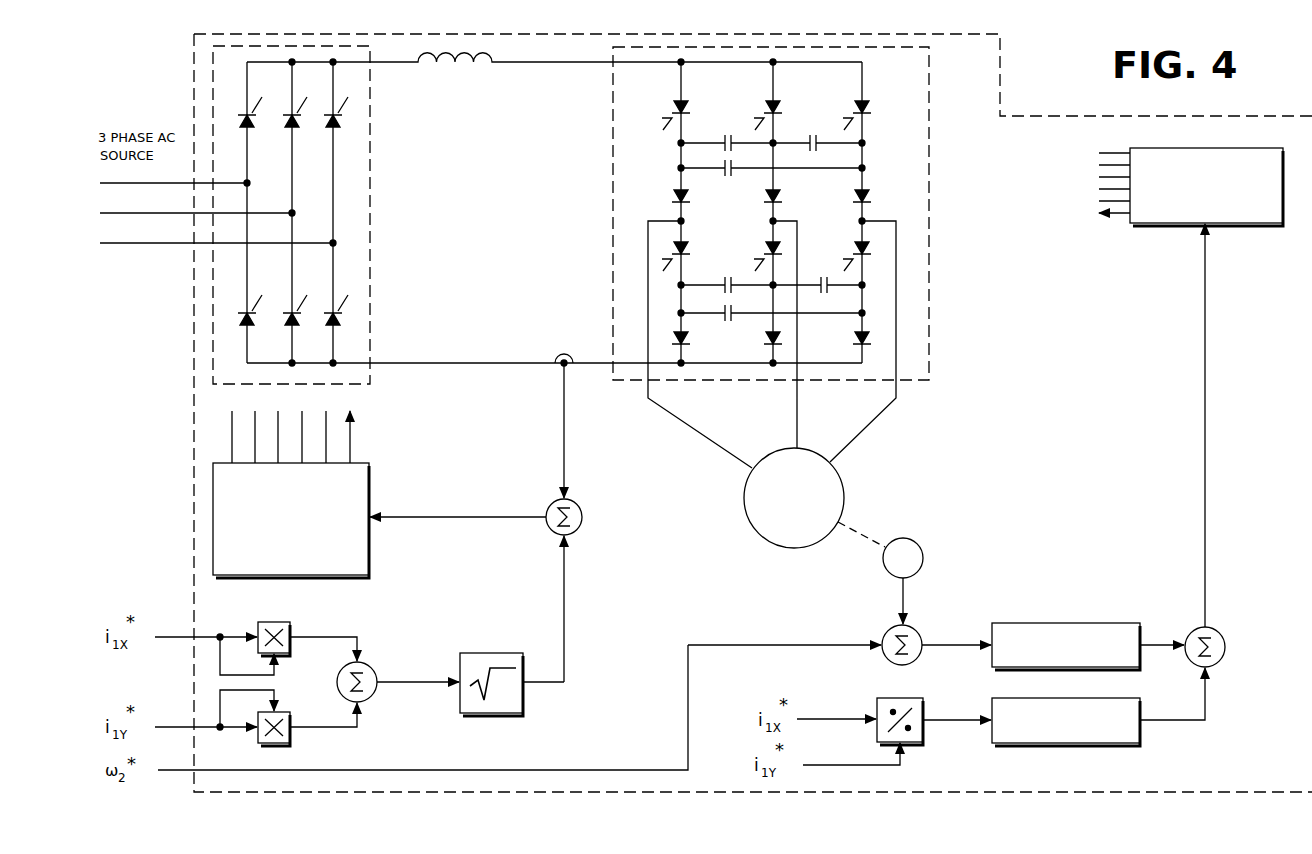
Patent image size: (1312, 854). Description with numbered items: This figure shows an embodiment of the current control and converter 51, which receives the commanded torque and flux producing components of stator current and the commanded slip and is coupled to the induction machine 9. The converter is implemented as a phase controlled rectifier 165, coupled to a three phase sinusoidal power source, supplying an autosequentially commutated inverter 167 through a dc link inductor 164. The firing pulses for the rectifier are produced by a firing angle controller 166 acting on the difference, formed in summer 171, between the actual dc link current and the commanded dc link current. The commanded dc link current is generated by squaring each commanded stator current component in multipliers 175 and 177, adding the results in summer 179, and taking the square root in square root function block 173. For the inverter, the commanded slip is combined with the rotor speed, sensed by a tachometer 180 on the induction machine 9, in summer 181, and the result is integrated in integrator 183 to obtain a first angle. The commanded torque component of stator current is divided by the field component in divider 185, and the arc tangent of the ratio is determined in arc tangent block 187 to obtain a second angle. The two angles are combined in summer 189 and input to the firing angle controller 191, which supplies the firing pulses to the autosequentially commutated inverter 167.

The current control and converter 51 is at (1043, 117).
The induction machine 9 is at (844, 482).
The DC link inductor 164 is at (485, 71).
The phase controlled rectifier 165 is at (371, 206).
The firing angle controller for phase controlled rectifier 166 is at (373, 472).
The autosequentially commutated inverter 167 is at (611, 184).
The summing junction 171 is at (582, 520).
The square root function block 173 is at (501, 652).
The multiplier 175 is at (290, 628).
The multiplier 177 is at (290, 744).
The summer 179 is at (374, 664).
The tachometer 180 is at (916, 540).
The summing junction 181 is at (888, 664).
The integrator 183 is at (1080, 608).
The divider 185 is at (923, 742).
The arc tangent block 187 is at (1082, 750).
The summer 189 is at (1216, 630).
The firing angle controller 191 is at (1236, 226).